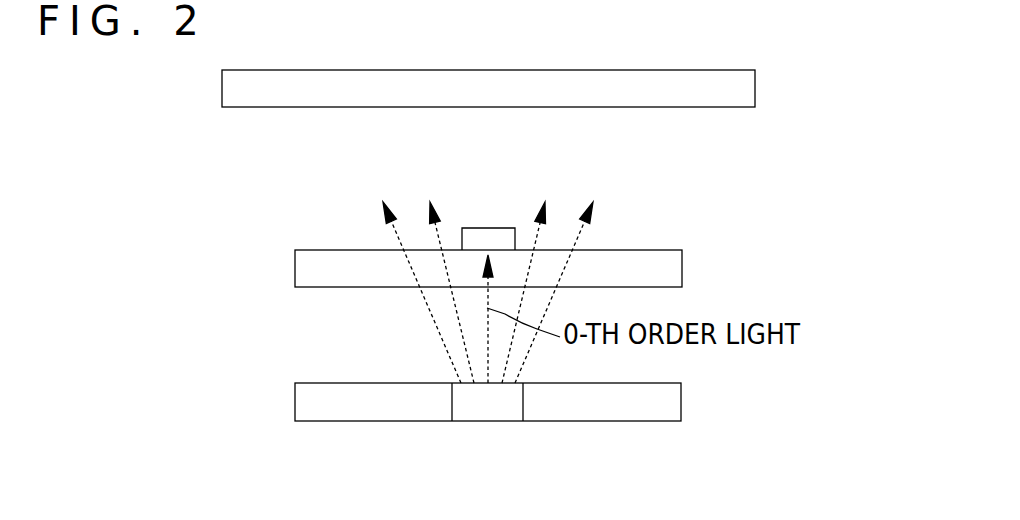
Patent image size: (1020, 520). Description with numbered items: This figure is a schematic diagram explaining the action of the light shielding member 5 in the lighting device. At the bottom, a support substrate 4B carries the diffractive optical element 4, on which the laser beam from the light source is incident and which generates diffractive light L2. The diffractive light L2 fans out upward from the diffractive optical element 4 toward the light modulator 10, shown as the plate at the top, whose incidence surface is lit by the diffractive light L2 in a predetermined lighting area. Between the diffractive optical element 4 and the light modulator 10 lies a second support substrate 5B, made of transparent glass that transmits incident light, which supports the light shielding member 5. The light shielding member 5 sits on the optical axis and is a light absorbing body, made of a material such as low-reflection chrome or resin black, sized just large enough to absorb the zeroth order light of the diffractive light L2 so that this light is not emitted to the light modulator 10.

The light modulator 10 is at (757, 82).
The support substrate 5B is at (684, 263).
The light shielding member 5 is at (490, 228).
The support substrate 4B is at (682, 400).
The diffraction element 4 is at (490, 410).
The diffractive light L2 is at (420, 334).